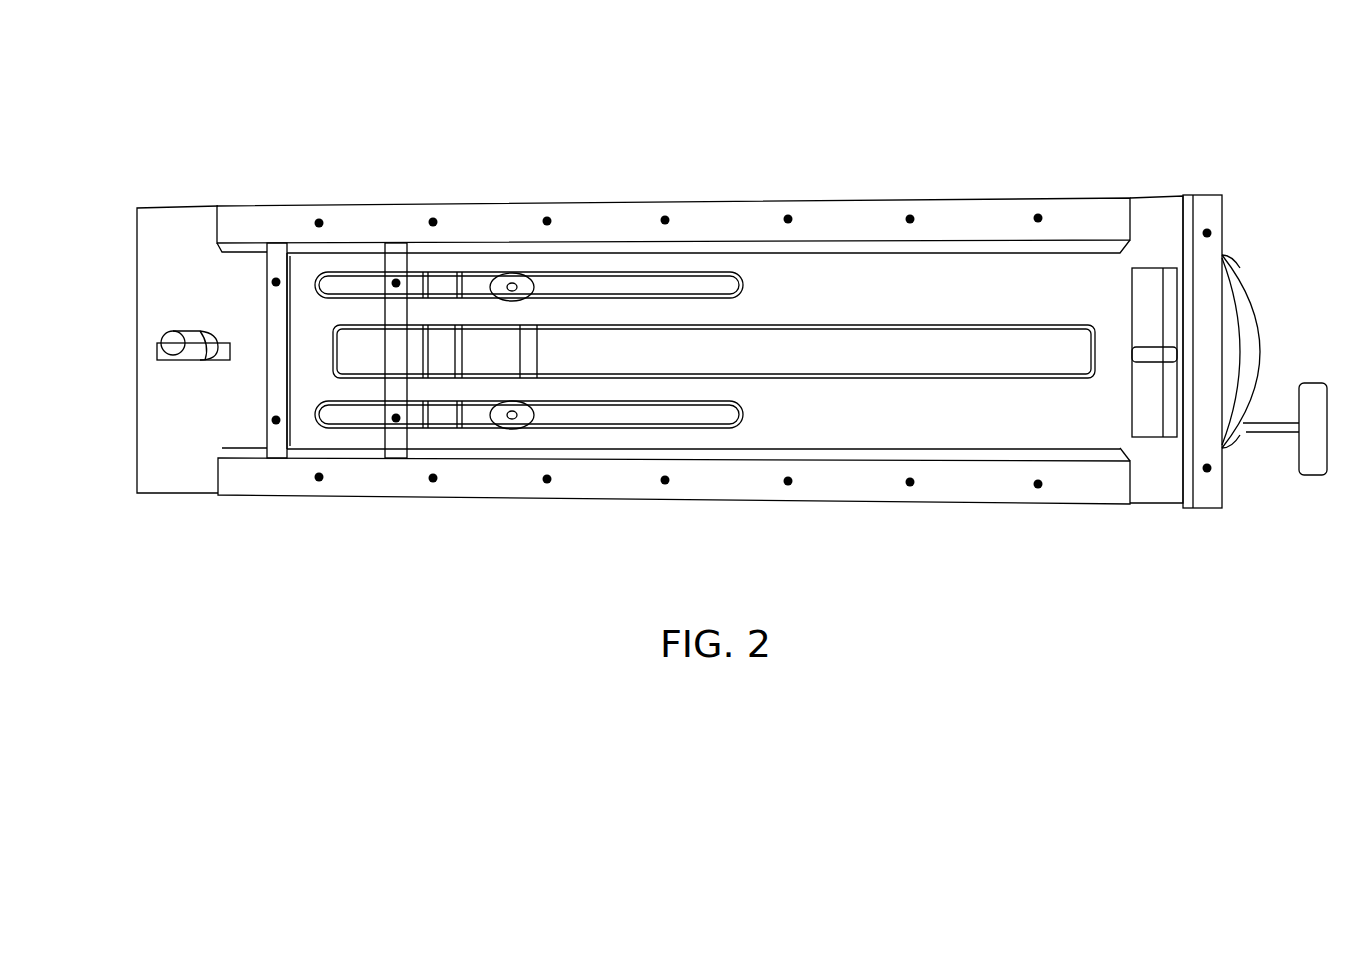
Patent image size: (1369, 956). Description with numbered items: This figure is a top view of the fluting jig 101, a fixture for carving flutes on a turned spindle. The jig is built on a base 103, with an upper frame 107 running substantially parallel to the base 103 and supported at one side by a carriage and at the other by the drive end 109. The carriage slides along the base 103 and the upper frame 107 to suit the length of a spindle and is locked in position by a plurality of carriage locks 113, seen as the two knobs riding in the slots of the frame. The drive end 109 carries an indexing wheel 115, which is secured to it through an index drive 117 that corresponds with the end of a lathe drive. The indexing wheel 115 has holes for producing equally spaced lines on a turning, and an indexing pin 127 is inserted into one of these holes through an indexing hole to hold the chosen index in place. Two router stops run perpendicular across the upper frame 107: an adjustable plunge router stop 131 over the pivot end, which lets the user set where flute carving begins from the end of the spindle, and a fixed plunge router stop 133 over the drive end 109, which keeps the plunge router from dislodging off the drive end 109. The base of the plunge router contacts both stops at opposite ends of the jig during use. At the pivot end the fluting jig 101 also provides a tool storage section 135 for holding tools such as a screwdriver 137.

The fluting jig 101 is at (141, 158).
The base 103 is at (182, 463).
The upper frame 107 is at (855, 220).
The drive end 109 is at (1216, 382).
The carriage locks 113 is at (512, 272).
The indexing wheel 115 is at (1233, 440).
The index drive 117 is at (1155, 347).
The indexing pin 127 is at (1313, 463).
The adjustable plunge router stop 131 is at (395, 320).
The fixed plunge router stop 133 is at (1205, 507).
The tool storage section 135 is at (152, 368).
The screwdriver 137 is at (168, 332).